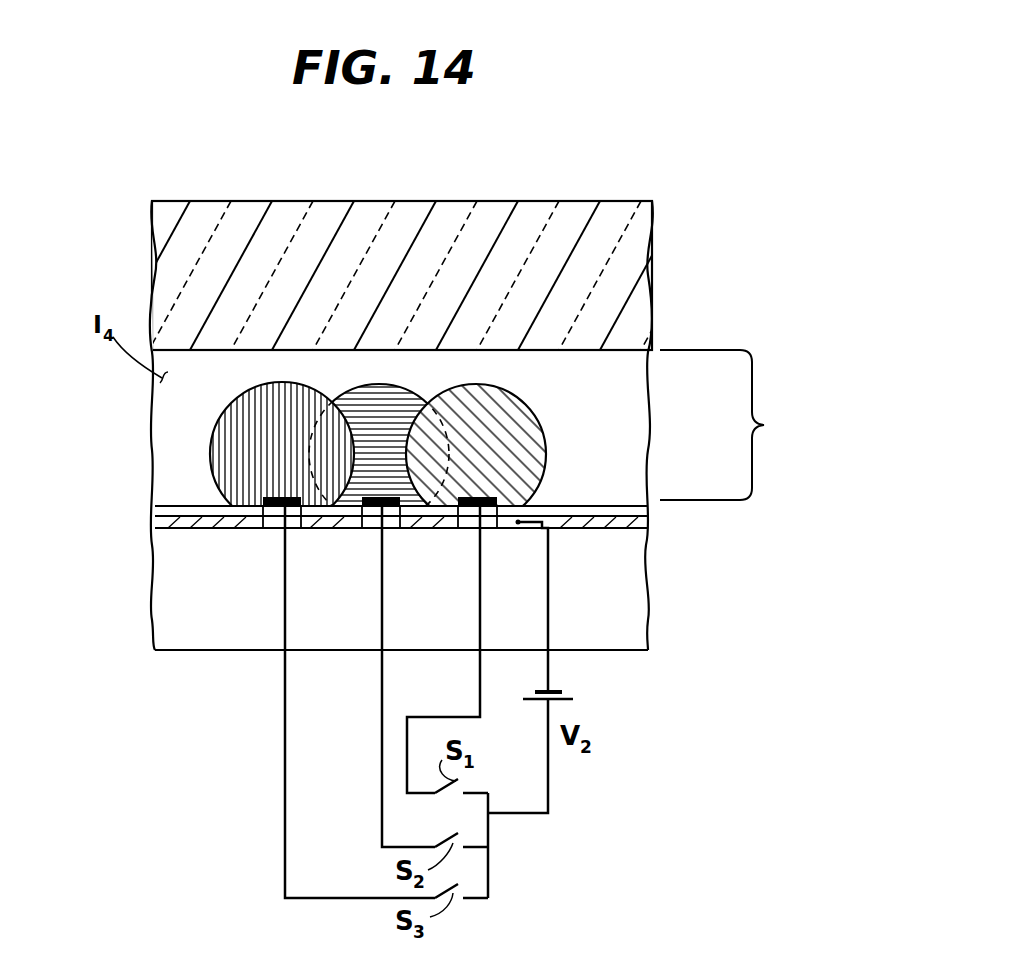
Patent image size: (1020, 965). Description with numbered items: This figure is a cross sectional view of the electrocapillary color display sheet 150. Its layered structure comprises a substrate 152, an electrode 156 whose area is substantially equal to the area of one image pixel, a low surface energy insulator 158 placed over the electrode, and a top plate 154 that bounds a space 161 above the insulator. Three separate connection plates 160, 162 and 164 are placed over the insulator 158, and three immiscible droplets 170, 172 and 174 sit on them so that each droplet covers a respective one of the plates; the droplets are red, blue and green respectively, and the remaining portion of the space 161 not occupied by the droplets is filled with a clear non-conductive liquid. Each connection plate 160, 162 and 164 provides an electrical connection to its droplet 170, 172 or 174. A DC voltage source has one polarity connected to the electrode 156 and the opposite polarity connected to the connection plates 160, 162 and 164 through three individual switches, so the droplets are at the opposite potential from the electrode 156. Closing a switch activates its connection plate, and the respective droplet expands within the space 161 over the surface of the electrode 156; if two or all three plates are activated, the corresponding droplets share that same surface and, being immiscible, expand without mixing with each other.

The color display sheet 150 is at (618, 166).
The substrate 152 is at (617, 577).
The top plate 154 is at (623, 248).
The electrode 156 is at (247, 530).
The low surface energy insulator 158 is at (178, 514).
The connection plate 160 is at (480, 497).
The space 161 is at (741, 425).
The connection plate 162 is at (382, 497).
The connection plate 164 is at (285, 498).
The droplet 170 is at (545, 412).
The droplet 172 is at (390, 382).
The droplet 174 is at (224, 410).